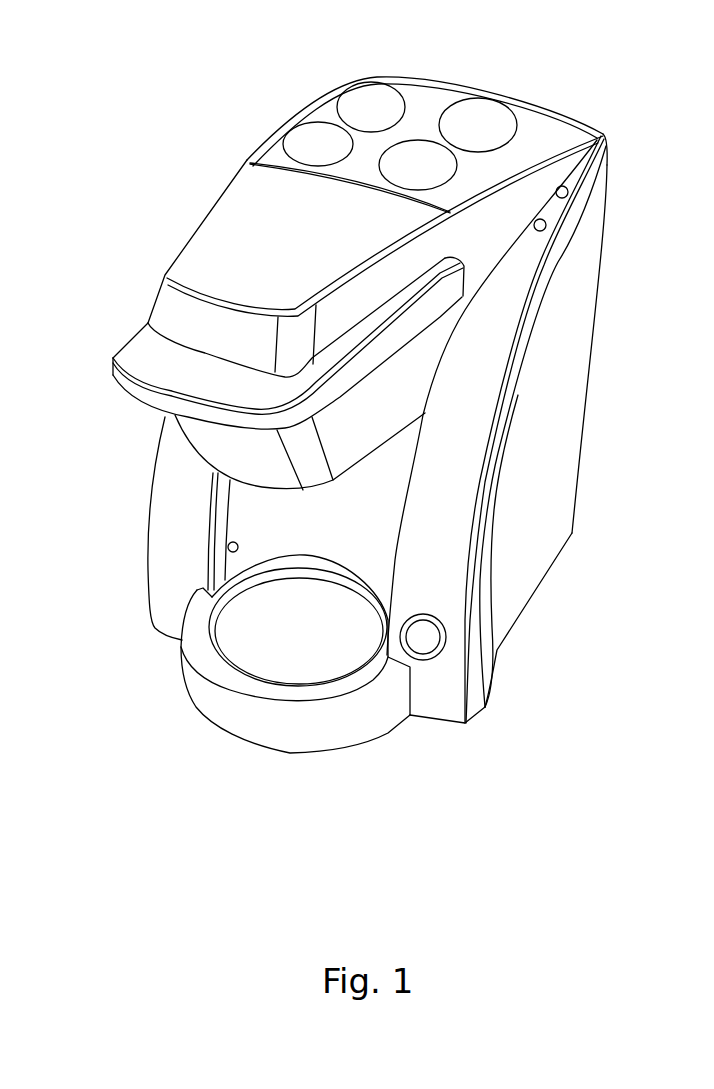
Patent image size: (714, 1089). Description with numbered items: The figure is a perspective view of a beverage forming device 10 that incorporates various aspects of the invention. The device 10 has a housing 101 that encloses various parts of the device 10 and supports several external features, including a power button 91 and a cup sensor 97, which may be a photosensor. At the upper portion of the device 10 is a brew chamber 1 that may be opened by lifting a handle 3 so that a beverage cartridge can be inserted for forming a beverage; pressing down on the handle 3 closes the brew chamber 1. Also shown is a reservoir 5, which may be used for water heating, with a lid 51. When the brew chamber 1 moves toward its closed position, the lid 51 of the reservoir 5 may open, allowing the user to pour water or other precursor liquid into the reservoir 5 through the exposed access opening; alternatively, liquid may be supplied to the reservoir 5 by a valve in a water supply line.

The beverage forming device 10 is at (143, 62).
The brew chamber 1 is at (150, 259).
The handle 3 is at (133, 353).
The reservoir 5 is at (228, 155).
The lid 51 is at (550, 120).
The power button 91 is at (422, 638).
The cup sensor 97 is at (236, 542).
The housing 101 is at (560, 475).